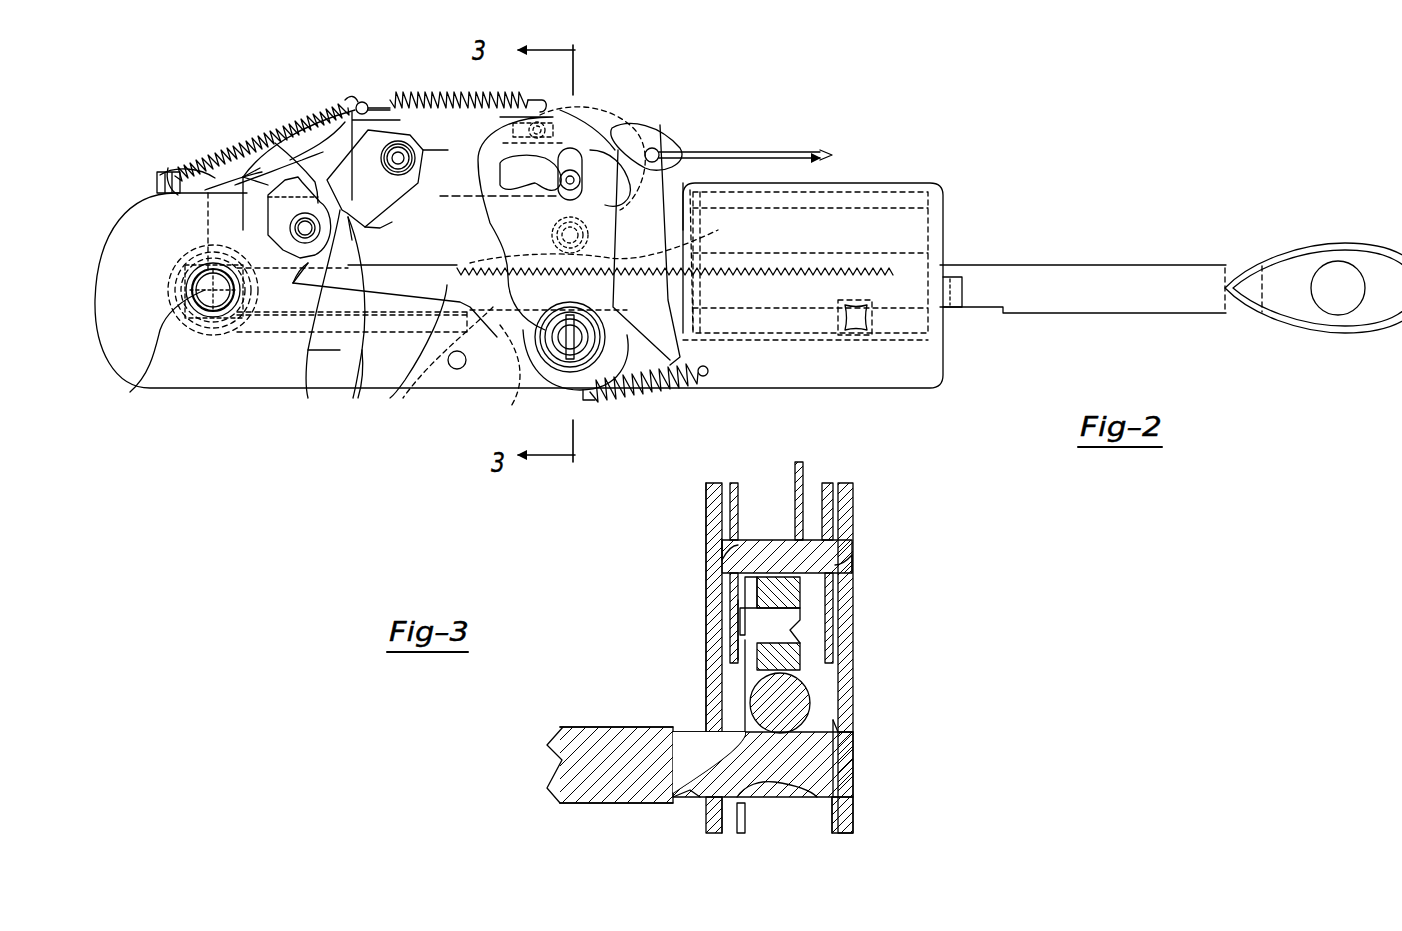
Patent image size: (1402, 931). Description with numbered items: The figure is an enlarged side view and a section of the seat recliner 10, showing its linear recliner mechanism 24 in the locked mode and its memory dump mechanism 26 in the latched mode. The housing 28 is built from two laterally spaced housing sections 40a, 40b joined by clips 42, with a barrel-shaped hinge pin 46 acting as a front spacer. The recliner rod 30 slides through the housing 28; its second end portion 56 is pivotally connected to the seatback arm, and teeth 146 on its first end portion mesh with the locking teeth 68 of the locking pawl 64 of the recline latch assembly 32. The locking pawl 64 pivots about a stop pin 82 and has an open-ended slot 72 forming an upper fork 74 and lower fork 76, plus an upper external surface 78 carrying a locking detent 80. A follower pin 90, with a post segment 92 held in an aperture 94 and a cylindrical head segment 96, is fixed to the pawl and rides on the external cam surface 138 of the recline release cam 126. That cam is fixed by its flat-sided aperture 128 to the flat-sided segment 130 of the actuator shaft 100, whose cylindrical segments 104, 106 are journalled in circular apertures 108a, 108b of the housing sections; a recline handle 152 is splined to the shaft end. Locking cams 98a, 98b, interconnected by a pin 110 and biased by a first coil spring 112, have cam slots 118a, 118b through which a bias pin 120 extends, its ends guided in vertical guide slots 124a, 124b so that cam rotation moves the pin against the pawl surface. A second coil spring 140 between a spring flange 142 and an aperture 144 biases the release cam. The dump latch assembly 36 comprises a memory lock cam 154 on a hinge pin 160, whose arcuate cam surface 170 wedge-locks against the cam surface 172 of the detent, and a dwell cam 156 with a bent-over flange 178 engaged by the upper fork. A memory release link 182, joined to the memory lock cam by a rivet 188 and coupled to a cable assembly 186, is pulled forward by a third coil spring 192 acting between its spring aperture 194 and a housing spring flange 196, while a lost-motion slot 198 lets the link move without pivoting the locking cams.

In FIG. 2, the seat recliner 10 is at (735, 88).
In FIG. 3, the seat recliner 10 is at (568, 602).
In FIG. 2, the linear recliner mechanism 24 is at (520, 342).
In FIG. 2, the memory dump mechanism 26 is at (327, 155).
In FIG. 2, the housing 28 is at (198, 378).
In FIG. 2, the recliner rod 30 is at (1112, 258).
In FIG. 3, the recliner rod 30 is at (740, 680).
In FIG. 2, the recline latch assembly 32 is at (790, 175).
In FIG. 2, the dump latch assembly 36 is at (307, 150).
In FIG. 3, the housing section 40a is at (710, 492).
In FIG. 3, the housing section 40b is at (850, 500).
In FIG. 2, the clips 42 is at (858, 320).
In FIG. 2, the hinge pin 46 is at (147, 351).
In FIG. 2, the second end portion 56 is at (1287, 282).
In FIG. 2, the locking pawl 64 is at (460, 237).
In FIG. 3, the locking pawl 64 is at (825, 688).
In FIG. 2, the locking teeth 68 is at (412, 390).
In FIG. 2, the open-ended slot 72 is at (268, 318).
In FIG. 2, the upper fork 74 is at (268, 180).
In FIG. 2, the lower fork 76 is at (296, 300).
In FIG. 2, the upper external surface 78 is at (453, 197).
In FIG. 2, the locking detent 80 is at (378, 228).
In FIG. 2, the stop pin 82 is at (290, 232).
In FIG. 2, the follower pin 90 is at (555, 222).
In FIG. 3, the follower pin 90 is at (805, 648).
In FIG. 3, the post segment 92 is at (790, 630).
In FIG. 3, the aperture 94 is at (795, 655).
In FIG. 3, the cylindrical head segment 96 is at (738, 612).
In FIG. 2, the locking cam 98a is at (560, 130).
In FIG. 3, the locking cam 98a is at (725, 840).
In FIG. 3, the locking cam 98b is at (835, 835).
In FIG. 2, the actuator shaft 100 is at (590, 332).
In FIG. 3, the actuator shaft 100 is at (855, 776).
In FIG. 3, the cylindrical segment 104 is at (697, 728).
In FIG. 3, the cylindrical segment 106 is at (840, 725).
In FIG. 3, the circular aperture 108a is at (722, 815).
In FIG. 3, the circular aperture 108b is at (855, 797).
In FIG. 2, the pin 110 is at (578, 112).
In FIG. 2, the first coil spring 112 is at (480, 95).
In FIG. 2, the cam slot 118a is at (580, 130).
In FIG. 3, the cam slot 118a is at (728, 570).
In FIG. 3, the cam slot 118b is at (845, 585).
In FIG. 2, the bias pin 120 is at (800, 160).
In FIG. 3, the bias pin 120 is at (855, 548).
In FIG. 3, the vertical guide slot 124a is at (722, 515).
In FIG. 3, the vertical guide slot 124b is at (845, 525).
In FIG. 2, the recline release cam 126 is at (535, 410).
In FIG. 3, the recline release cam 126 is at (748, 820).
In FIG. 3, the flat-sided aperture 128 is at (838, 800).
In FIG. 3, the flat-sided segment 130 is at (700, 795).
In FIG. 2, the external cam surface 138 is at (690, 255).
In FIG. 2, the second coil spring 140 is at (660, 400).
In FIG. 2, the spring flange 142 is at (590, 405).
In FIG. 2, the aperture 144 is at (706, 373).
In FIG. 2, the teeth 146 is at (415, 385).
In FIG. 3, the recline handle 152 is at (593, 727).
In FIG. 2, the memory lock cam 154 is at (382, 195).
In FIG. 3, the memory lock cam 154 is at (600, 803).
In FIG. 2, the dwell cam 156 is at (235, 175).
In FIG. 2, the hinge pin 160 is at (400, 158).
In FIG. 2, the arcuate cam surface 170 is at (310, 380).
In FIG. 2, the arcuate cam surface 172 is at (353, 398).
In FIG. 2, the bent-over flange 178 is at (175, 170).
In FIG. 2, the memory release link 182 is at (745, 150).
In FIG. 3, the memory release link 182 is at (808, 465).
In FIG. 2, the cable assembly 186 is at (822, 155).
In FIG. 2, the rivet 188 is at (390, 95).
In FIG. 2, the third coil spring 192 is at (248, 160).
In FIG. 2, the spring aperture 194 is at (355, 100).
In FIG. 2, the spring flange 196 is at (155, 183).
In FIG. 2, the lost-motion slot 198 is at (665, 140).